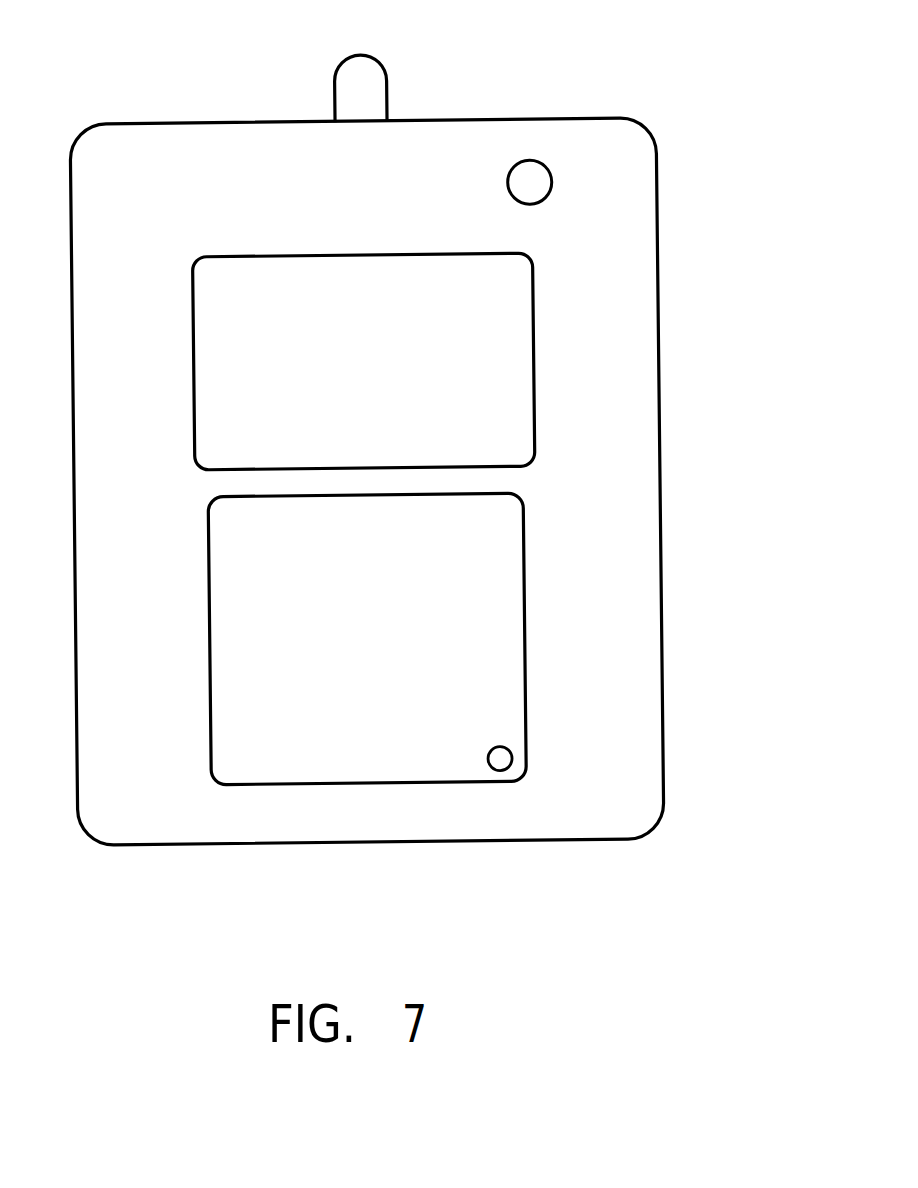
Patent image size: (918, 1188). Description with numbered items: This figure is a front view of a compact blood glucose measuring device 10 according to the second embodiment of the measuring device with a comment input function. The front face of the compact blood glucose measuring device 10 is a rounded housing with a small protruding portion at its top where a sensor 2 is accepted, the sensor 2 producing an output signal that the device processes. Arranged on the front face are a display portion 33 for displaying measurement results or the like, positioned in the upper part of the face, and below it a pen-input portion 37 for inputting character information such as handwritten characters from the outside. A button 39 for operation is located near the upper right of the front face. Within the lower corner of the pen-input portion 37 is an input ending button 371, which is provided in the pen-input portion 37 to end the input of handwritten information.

The sensor 2 is at (372, 88).
The compact blood glucose measuring device 10 is at (643, 293).
The button 39 is at (538, 183).
The display portion 33 is at (520, 400).
The pen-input portion 37 is at (512, 605).
The input ending button 371 is at (503, 762).